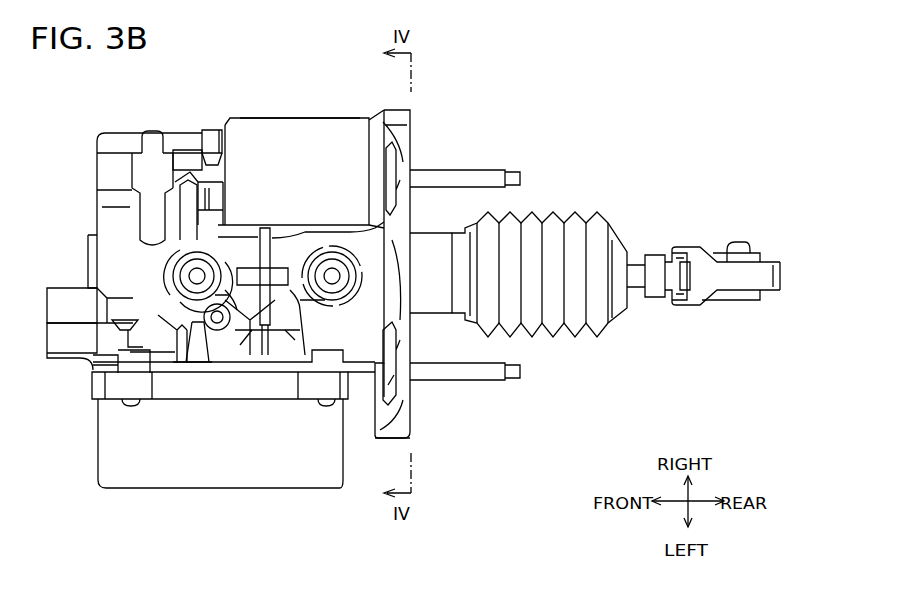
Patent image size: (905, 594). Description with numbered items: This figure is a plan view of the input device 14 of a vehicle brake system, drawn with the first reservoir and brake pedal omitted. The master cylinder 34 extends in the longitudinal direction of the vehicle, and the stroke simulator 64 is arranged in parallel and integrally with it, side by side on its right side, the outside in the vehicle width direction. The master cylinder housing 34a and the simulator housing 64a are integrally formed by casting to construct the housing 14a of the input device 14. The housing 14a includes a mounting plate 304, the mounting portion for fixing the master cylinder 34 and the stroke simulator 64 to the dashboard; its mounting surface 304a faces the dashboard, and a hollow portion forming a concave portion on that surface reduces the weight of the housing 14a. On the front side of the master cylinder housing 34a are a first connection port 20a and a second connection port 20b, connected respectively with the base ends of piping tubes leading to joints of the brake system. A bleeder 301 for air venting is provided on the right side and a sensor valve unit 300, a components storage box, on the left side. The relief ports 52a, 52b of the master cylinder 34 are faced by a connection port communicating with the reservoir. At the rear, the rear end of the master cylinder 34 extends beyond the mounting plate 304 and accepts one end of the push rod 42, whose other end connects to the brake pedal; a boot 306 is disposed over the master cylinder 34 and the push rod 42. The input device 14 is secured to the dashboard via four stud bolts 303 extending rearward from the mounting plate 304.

The input device 14 is at (506, 84).
The housing 14a is at (108, 119).
The first connection port 20a is at (46, 305).
The second connection port 20b is at (44, 355).
The master cylinder 34 is at (423, 310).
The master cylinder housing 34a is at (86, 258).
The push rod 42 is at (637, 280).
The relief port 52a is at (332, 276).
The relief port 52b is at (197, 276).
The stroke simulator 64 is at (310, 188).
The simulator housing 64a is at (296, 117).
The sensor valve unit 300 is at (240, 457).
The bleeder 301 is at (153, 133).
The stud bolts 303 is at (481, 170).
The mounting plate 304 is at (405, 119).
The mounting surface 304a is at (410, 428).
The boot 306 is at (580, 230).